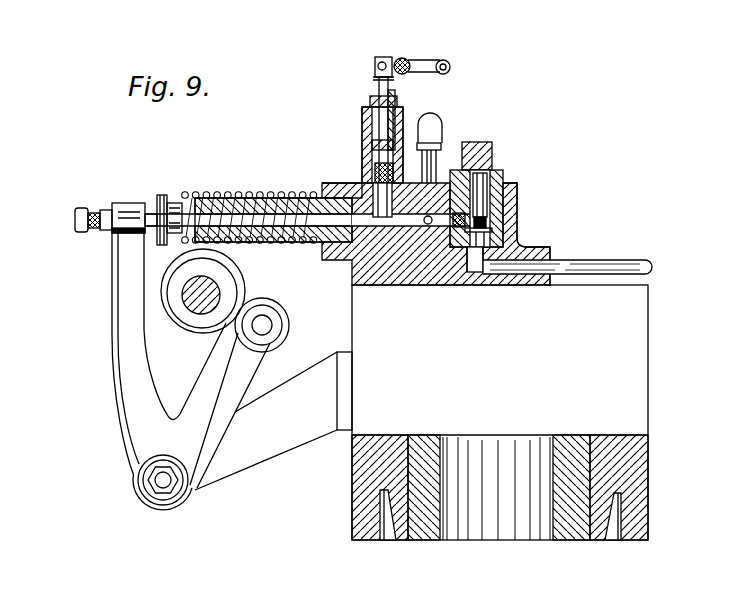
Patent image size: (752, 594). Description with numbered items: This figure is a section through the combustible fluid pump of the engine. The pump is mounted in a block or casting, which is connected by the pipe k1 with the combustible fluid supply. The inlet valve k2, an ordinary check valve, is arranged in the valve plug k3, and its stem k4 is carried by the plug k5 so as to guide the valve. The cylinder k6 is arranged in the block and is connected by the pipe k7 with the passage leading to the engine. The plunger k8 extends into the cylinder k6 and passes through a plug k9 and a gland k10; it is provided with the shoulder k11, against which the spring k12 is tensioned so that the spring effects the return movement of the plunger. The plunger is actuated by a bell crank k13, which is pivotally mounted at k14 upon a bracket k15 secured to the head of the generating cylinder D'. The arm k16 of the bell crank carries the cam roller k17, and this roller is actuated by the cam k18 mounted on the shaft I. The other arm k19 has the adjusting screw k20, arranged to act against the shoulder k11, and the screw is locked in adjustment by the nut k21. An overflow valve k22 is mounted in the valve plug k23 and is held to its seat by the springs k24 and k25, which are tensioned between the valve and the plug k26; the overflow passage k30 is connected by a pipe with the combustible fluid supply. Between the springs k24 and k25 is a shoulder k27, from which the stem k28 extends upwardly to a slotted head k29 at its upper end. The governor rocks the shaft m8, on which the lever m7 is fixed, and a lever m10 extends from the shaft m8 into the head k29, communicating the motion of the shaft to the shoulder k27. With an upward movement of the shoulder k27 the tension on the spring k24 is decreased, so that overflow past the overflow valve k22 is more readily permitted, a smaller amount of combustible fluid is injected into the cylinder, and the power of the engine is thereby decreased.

The pipe k1 is at (583, 260).
The inlet valve k2 is at (517, 202).
The valve plug k3 is at (503, 181).
The valve stem k4 is at (482, 183).
The plug k5 is at (480, 143).
The cylinder k6 is at (440, 229).
The pipe k7 is at (436, 125).
The plunger k8 is at (296, 212).
The plug k9 is at (268, 199).
The gland k10 is at (228, 199).
The shoulder k11 is at (160, 194).
The spring k12 is at (190, 198).
The bell crank k13 is at (103, 390).
The pivot k14 is at (170, 482).
The bracket k15 is at (300, 404).
The arm k16 is at (232, 377).
The cam roller k17 is at (293, 300).
The cam k18 is at (242, 266).
The arm k19 is at (123, 288).
The adjusting screw k20 is at (80, 207).
The nut k21 is at (100, 232).
The overflow valve k22 is at (376, 168).
The valve plug k23 is at (368, 111).
The spring k24 is at (372, 146).
The spring k25 is at (407, 80).
The plug k26 is at (372, 93).
The shoulder k27 is at (366, 131).
The stem k28 is at (392, 84).
The slotted head k29 is at (380, 58).
The overflow passage k30 is at (374, 185).
The lever m7 is at (448, 61).
The shaft m8 is at (422, 59).
The lever m10 is at (413, 45).
The shaft I is at (205, 303).
The generating cylinder D' is at (500, 412).